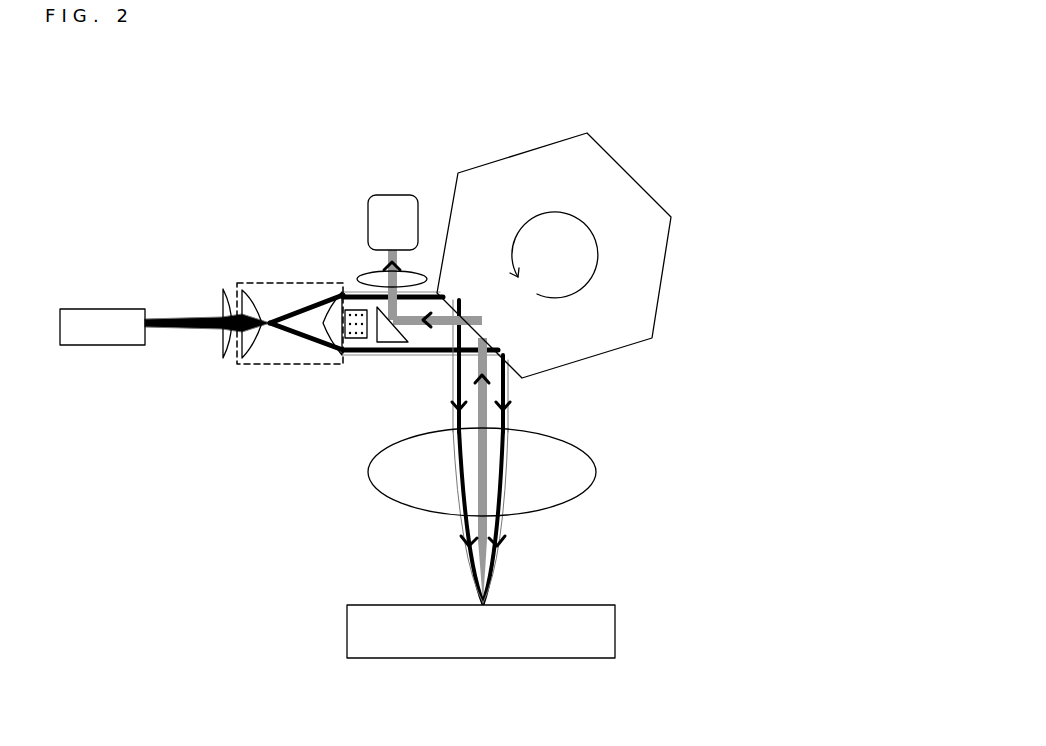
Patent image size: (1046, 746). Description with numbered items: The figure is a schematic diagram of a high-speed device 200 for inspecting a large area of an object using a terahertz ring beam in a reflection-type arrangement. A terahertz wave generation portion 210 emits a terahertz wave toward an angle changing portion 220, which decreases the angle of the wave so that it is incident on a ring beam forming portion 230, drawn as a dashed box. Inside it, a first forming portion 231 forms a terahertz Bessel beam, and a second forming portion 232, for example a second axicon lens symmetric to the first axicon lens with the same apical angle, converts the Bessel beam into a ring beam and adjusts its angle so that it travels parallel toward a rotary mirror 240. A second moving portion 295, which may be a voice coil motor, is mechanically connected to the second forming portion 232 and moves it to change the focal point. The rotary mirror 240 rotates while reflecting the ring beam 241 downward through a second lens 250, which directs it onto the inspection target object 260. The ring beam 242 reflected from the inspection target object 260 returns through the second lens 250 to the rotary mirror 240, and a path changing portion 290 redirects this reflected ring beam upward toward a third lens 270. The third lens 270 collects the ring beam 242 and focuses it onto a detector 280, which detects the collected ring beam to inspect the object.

The high-speed device 200 is at (662, 85).
The terahertz wave generation portion 210 is at (105, 309).
The angle changing portion 220 is at (226, 289).
The ring beam forming portion 230 is at (290, 283).
The first forming portion 231 is at (241, 357).
The second forming portion 232 is at (318, 355).
The rotary mirror 240 is at (638, 184).
The ring beam 241 is at (512, 403).
The ring beam 242 is at (488, 565).
The second lens 250 is at (597, 472).
The inspection target object 260 is at (615, 630).
The third lens 270 is at (362, 275).
The detector 280 is at (392, 195).
The path changing portion 290 is at (396, 344).
The second moving portion 295 is at (353, 339).